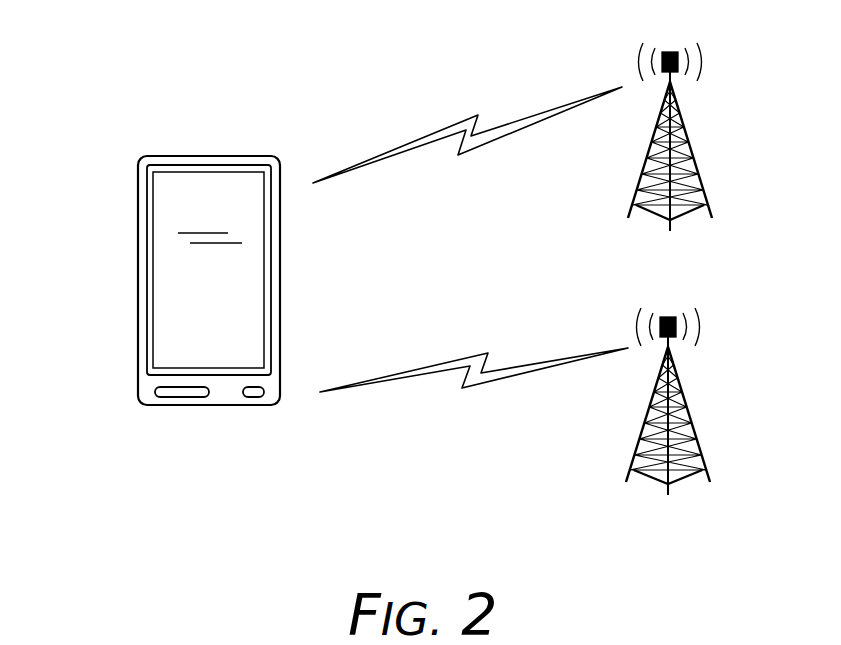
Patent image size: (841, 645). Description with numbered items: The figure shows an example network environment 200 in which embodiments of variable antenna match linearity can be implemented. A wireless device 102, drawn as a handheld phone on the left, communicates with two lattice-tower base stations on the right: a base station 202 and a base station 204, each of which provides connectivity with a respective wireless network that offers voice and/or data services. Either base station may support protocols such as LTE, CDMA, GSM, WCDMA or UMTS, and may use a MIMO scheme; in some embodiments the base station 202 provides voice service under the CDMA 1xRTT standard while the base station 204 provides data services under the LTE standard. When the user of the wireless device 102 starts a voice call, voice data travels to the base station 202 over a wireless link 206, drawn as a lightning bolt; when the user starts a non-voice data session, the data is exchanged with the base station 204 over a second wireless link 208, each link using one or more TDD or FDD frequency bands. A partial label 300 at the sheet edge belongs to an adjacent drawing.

The network environment 200 is at (198, 69).
The wireless device 102 is at (226, 441).
The base station 202 is at (688, 155).
The base station 204 is at (688, 428).
The wireless link 206 is at (425, 153).
The wireless link 208 is at (396, 364).
The partial label of adjacent figure 300 is at (722, 644).